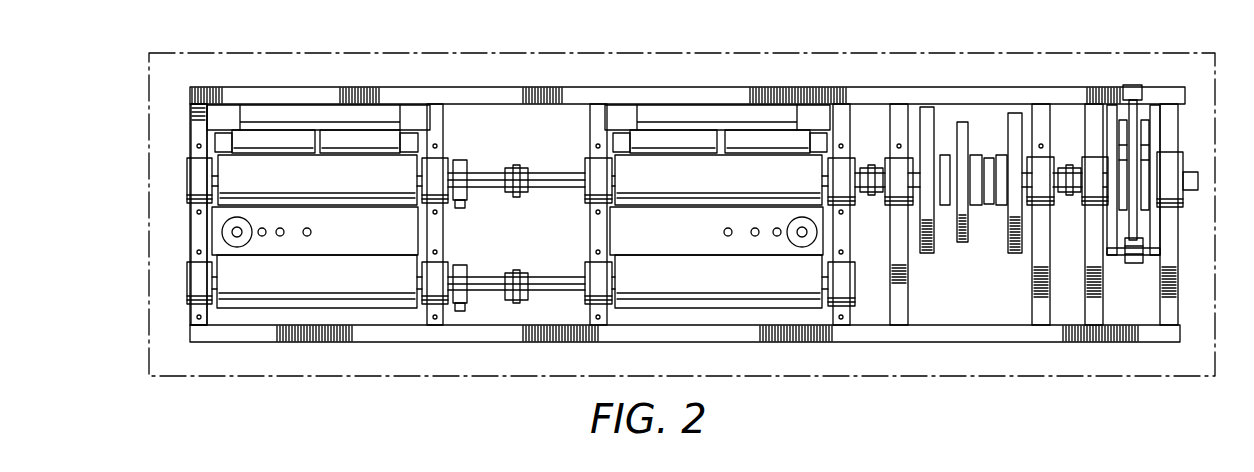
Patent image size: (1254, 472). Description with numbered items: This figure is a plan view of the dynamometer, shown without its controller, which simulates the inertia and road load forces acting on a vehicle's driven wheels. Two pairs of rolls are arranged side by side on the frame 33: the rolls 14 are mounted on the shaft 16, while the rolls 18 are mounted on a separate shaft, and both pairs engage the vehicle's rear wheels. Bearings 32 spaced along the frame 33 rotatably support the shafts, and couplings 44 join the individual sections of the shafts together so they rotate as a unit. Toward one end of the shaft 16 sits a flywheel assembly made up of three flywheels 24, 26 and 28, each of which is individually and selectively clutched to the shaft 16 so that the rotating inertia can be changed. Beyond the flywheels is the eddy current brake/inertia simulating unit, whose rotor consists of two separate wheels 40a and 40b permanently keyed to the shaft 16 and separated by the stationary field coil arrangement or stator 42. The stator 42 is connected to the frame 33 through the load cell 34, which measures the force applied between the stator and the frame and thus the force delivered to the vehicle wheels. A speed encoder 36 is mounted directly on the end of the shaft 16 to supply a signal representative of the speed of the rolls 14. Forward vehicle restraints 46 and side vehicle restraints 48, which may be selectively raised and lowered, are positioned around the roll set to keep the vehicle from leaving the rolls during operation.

The rolls 14 is at (520, 180).
The shaft 16 is at (488, 173).
The rolls 18 is at (520, 281).
The flywheel 24 is at (927, 255).
The flywheel 26 is at (962, 244).
The flywheel 28 is at (1015, 255).
The bearings 32 is at (188, 173).
The frame 33 is at (602, 90).
The load cell 34 is at (1133, 85).
The speed encoder 36 is at (1198, 180).
The rotor wheel 40a is at (1110, 255).
The rotor wheel 40b is at (1155, 215).
The stator 42 is at (1133, 263).
The couplings 44 is at (517, 168).
The forward vehicle restraints 46 is at (345, 131).
The side vehicle restraints 48 is at (237, 247).